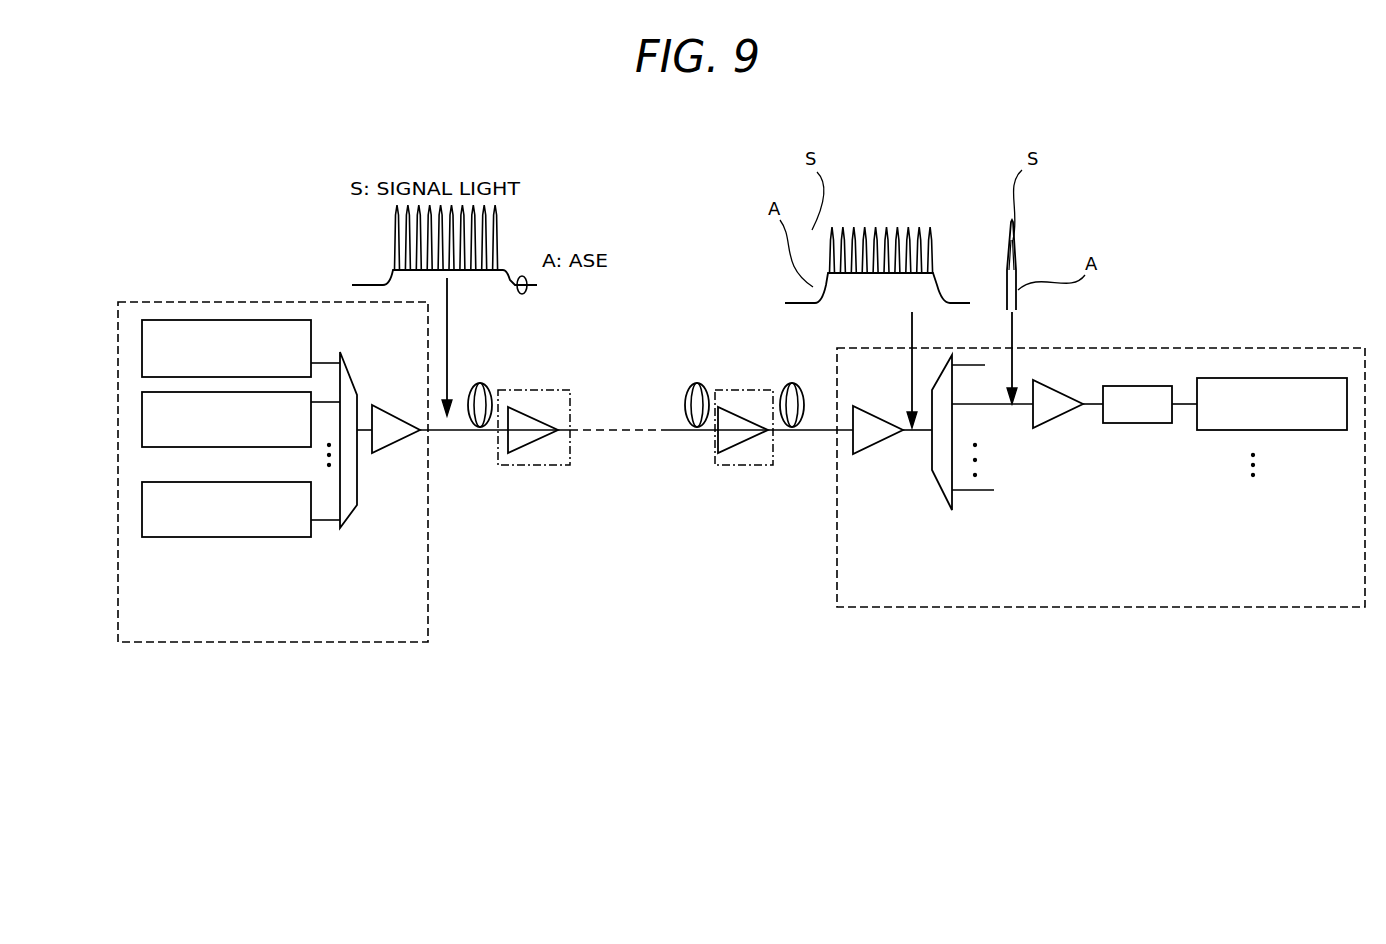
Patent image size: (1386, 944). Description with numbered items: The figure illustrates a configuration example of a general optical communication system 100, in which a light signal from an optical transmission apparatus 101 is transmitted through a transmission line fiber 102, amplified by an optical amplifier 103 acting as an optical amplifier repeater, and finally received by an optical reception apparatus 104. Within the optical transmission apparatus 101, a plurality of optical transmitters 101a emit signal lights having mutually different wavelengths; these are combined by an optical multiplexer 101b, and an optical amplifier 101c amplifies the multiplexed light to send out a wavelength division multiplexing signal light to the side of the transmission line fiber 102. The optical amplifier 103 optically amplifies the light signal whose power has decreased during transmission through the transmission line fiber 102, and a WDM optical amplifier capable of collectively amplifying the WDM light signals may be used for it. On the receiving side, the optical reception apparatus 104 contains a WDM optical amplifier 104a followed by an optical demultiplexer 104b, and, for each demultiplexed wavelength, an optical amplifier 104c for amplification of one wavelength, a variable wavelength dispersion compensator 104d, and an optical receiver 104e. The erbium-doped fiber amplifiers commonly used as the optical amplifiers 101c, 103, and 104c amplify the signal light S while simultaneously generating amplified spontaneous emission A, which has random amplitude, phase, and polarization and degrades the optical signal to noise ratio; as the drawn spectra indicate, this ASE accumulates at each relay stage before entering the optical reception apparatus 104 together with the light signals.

The optical communication system 100 is at (612, 653).
The optical transmission apparatus 101 is at (285, 643).
The optical transmitter 101a is at (220, 320).
The optical multiplexer 101b is at (357, 512).
The optical amplifier 101c is at (393, 448).
The transmission line fiber 102 is at (484, 382).
The optical amplifier 103 is at (533, 465).
The optical reception apparatus 104 is at (1183, 610).
The WDM optical amplifier 104a is at (883, 454).
The optical demultiplexer 104b is at (940, 485).
The optical amplifier 104c is at (1050, 388).
The variable wavelength dispersion compensator 104d is at (1137, 386).
The optical receiver 104e is at (1250, 378).